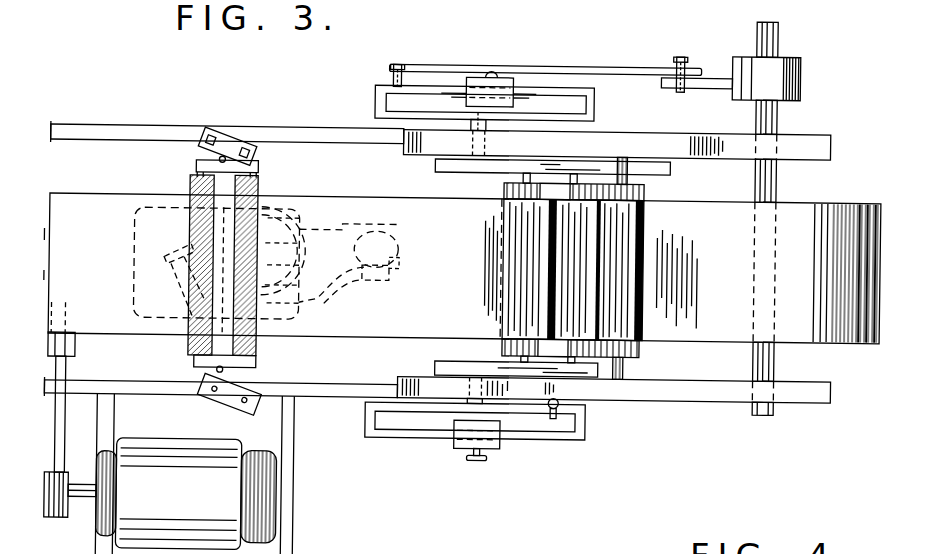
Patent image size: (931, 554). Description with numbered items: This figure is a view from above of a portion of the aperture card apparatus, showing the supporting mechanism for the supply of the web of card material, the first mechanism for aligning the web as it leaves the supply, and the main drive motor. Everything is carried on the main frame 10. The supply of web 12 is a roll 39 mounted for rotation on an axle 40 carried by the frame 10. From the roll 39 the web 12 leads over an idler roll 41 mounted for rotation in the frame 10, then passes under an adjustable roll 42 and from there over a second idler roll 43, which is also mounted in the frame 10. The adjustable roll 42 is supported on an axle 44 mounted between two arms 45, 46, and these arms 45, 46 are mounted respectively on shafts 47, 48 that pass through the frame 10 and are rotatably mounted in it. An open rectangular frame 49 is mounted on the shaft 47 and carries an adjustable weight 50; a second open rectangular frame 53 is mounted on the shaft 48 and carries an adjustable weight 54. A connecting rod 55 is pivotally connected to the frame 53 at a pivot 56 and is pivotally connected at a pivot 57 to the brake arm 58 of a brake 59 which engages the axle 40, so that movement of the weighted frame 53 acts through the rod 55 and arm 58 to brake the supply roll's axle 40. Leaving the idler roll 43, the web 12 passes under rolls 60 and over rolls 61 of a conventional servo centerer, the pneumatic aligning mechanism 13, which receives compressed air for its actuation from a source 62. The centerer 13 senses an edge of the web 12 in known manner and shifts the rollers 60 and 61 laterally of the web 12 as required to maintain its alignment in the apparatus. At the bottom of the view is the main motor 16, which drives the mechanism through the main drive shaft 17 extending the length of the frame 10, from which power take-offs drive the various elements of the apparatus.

The main frame 10 is at (343, 379).
The web of card material 12 is at (462, 268).
The pneumatic aligning mechanism (servo centerer) 13 is at (215, 148).
The main motor 16 is at (171, 493).
The main drive shaft 17 is at (79, 335).
The roll of web material 39 is at (860, 333).
The axle 40 is at (777, 168).
The idler roll 41 is at (643, 182).
The adjustable roll 42 is at (585, 350).
The idler roll 43 is at (512, 190).
The axle 44 is at (578, 371).
The arm 45 is at (487, 358).
The arm 46 is at (468, 167).
The shaft 47 is at (470, 380).
The shaft 48 is at (486, 137).
The open rectangular frame 49 is at (553, 428).
The adjustable weight 50 is at (468, 436).
The open rectangular frame 53 is at (596, 96).
The adjustable weight 54 is at (508, 74).
The connecting rod 55 is at (558, 60).
The pivotal connection 56 is at (402, 80).
The pivotal connection 57 is at (676, 56).
The brake arm 58 is at (710, 80).
The brake 59 is at (797, 60).
The rolls of servo centerer 60 is at (262, 179).
The rolls of servo centerer 61 is at (190, 341).
The source of compressed air 62 is at (390, 238).